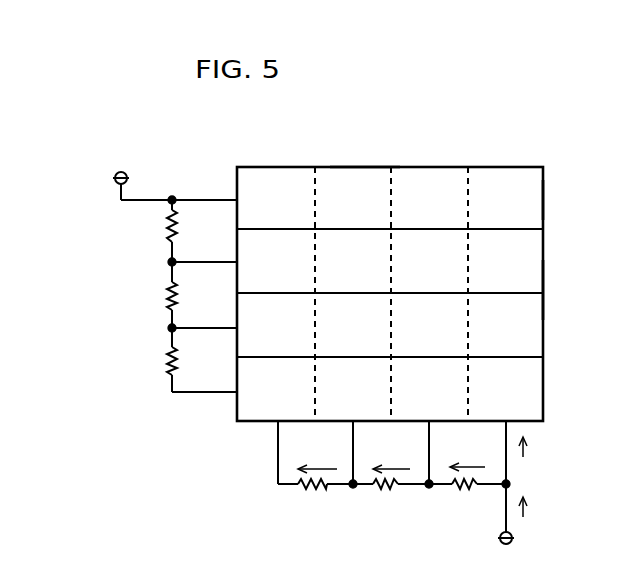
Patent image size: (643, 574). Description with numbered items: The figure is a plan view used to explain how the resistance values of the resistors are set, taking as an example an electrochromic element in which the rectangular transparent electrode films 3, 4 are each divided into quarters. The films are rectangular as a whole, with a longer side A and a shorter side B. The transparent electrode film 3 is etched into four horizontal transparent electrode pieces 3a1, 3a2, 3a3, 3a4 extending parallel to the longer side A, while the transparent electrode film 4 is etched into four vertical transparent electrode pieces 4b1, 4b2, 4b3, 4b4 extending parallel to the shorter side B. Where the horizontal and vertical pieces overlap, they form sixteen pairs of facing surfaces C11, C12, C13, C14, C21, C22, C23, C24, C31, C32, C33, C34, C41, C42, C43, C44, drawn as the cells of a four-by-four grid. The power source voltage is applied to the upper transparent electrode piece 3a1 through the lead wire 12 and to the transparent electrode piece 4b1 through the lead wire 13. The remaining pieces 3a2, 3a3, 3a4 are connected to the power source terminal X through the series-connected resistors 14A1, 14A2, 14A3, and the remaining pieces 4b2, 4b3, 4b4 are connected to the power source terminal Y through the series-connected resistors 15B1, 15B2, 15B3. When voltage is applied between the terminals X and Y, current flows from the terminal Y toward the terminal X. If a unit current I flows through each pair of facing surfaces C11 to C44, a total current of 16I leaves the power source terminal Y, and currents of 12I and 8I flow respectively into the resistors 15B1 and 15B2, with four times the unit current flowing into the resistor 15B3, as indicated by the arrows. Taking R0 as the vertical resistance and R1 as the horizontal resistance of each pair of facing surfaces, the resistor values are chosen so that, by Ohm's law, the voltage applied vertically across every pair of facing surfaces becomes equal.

The transparent electrode film 3 is at (605, 178).
The transparent electrode film 4 is at (523, 120).
The transparent electrode piece 3a1 is at (543, 200).
The transparent electrode piece 3a2 is at (543, 251).
The transparent electrode piece 3a3 is at (543, 326).
The transparent electrode piece 3a4 is at (545, 384).
The transparent electrode piece 4b1 is at (500, 176).
The transparent electrode piece 4b2 is at (428, 176).
The transparent electrode piece 4b3 is at (340, 176).
The transparent electrode piece 4b4 is at (264, 176).
The longer side A is at (370, 167).
The shorter side B is at (545, 286).
The power source terminal X is at (128, 172).
The power source terminal Y is at (514, 537).
The lead wire 12 is at (184, 200).
The lead wire 13 is at (515, 469).
The resistor 14A1 is at (170, 228).
The resistor 14A2 is at (170, 293).
The resistor 14A3 is at (170, 357).
The resistor 15B1 is at (458, 500).
The resistor 15B2 is at (380, 500).
The resistor 15B3 is at (304, 500).
The current 8I is at (403, 470).
The current 12I is at (470, 455).
The current 16I is at (523, 518).
The facing surfaces C11 is at (275, 199).
The facing surfaces C12 is at (349, 199).
The facing surfaces C13 is at (425, 198).
The facing surfaces C14 is at (501, 197).
The facing surfaces C21 is at (275, 261).
The facing surfaces C22 is at (349, 259).
The facing surfaces C23 is at (425, 257).
The facing surfaces C24 is at (501, 256).
The facing surfaces C31 is at (275, 328).
The facing surfaces C32 is at (351, 324).
The facing surfaces C33 is at (425, 321).
The facing surfaces C34 is at (501, 319).
The facing surfaces C41 is at (274, 390).
The facing surfaces C42 is at (350, 389).
The facing surfaces C43 is at (426, 388).
The facing surfaces C44 is at (502, 388).